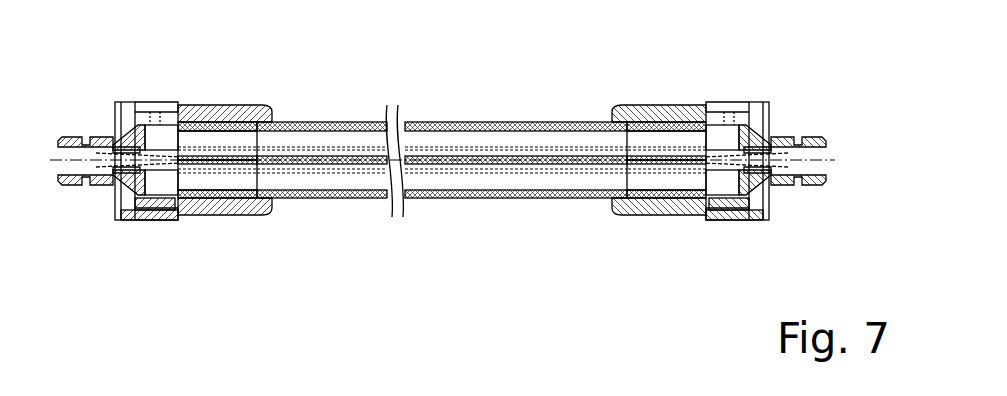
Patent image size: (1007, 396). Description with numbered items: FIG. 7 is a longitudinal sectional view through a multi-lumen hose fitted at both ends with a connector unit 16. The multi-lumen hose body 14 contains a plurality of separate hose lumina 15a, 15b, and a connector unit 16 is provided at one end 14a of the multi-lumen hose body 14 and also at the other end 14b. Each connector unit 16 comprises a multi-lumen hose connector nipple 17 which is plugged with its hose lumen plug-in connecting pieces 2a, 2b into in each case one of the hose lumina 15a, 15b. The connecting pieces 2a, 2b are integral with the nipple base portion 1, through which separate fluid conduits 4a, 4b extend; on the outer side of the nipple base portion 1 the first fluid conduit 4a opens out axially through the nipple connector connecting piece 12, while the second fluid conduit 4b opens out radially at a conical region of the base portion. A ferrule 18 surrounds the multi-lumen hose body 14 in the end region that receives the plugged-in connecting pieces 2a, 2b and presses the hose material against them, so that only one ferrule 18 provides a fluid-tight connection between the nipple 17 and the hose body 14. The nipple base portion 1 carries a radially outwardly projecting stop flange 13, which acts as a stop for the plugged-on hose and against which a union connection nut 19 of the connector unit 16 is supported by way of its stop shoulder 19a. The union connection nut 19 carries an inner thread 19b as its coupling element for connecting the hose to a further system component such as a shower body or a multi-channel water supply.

The nipple base portion 1 is at (158, 128).
The hose lumen plug-in connecting piece 2a is at (225, 118).
The hose lumen plug-in connecting piece 2b is at (250, 212).
The first fluid conduit 4a is at (148, 127).
The second fluid conduit 4b is at (168, 178).
The nipple connector connecting piece 12 is at (72, 182).
The stop flange 13 is at (200, 170).
The multi-lumen hose body 14 is at (447, 122).
The one end of the multi-lumen hose body 14a is at (602, 210).
The other end of the multi-lumen hose body 14b is at (282, 197).
The hose lumen 15a is at (260, 137).
The hose lumen 15b is at (283, 180).
The connector unit 16 is at (200, 198).
The multi-lumen hose connector nipple 17 is at (178, 120).
The ferrule 18 is at (227, 198).
The union connection nut 19 is at (130, 102).
The stop shoulder 19a is at (173, 212).
The inner thread 19b is at (133, 213).